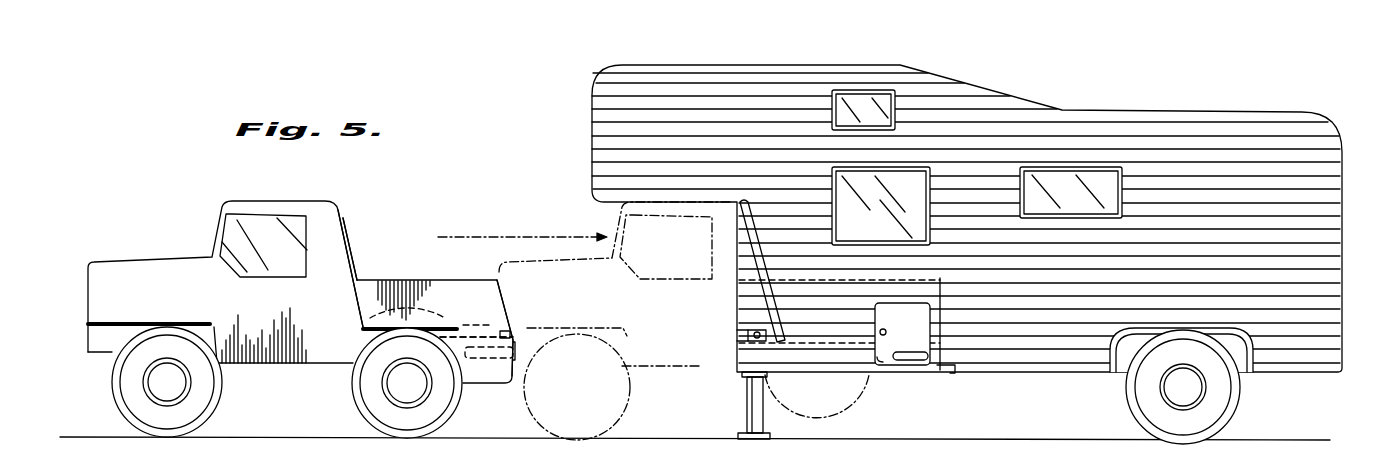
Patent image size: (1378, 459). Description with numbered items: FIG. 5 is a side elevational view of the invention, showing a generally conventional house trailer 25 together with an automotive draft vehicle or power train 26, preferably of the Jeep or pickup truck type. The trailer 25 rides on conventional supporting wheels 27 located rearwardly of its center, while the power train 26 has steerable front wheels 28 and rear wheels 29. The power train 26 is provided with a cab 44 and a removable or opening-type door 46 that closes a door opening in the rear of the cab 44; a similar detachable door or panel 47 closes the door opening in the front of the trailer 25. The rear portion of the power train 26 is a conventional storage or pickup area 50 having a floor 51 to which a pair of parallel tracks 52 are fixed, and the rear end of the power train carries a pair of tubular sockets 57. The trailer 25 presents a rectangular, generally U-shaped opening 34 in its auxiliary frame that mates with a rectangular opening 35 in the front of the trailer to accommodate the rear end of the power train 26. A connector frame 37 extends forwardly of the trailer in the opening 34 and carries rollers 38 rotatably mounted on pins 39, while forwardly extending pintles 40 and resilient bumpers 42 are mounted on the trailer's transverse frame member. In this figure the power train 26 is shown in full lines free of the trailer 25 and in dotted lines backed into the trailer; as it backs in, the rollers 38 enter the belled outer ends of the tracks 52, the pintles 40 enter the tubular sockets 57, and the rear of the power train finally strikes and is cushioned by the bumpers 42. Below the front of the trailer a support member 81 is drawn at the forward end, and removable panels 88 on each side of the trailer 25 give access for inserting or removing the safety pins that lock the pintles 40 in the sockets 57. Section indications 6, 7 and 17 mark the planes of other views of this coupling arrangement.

The section line 6- 6 is at (545, 183).
The section line 7- 7 is at (527, 51).
The section line 17- 17 is at (708, 362).
The house trailer 25 is at (967, 202).
The power train 26 is at (418, 279).
The supporting wheels 27 is at (1150, 410).
The steerable front wheels 28 is at (112, 380).
The rear wheels 29 is at (352, 395).
The U-shaped opening 34 is at (909, 355).
The rectangular opening 35 is at (796, 282).
The connector frame 37 is at (736, 372).
The rollers 38 is at (748, 340).
The pins 39 is at (757, 347).
The pintles 40 is at (916, 362).
The resilient bumpers 42 is at (952, 372).
The cab 44 is at (332, 208).
The door 46 is at (345, 238).
The door or panel 47 is at (763, 238).
The pickup area 50 is at (478, 279).
The floor 51 is at (512, 332).
The tracks 52 is at (476, 325).
The tubular sockets 57 is at (516, 355).
The jack 81 is at (770, 392).
The removable panels 88 is at (883, 358).